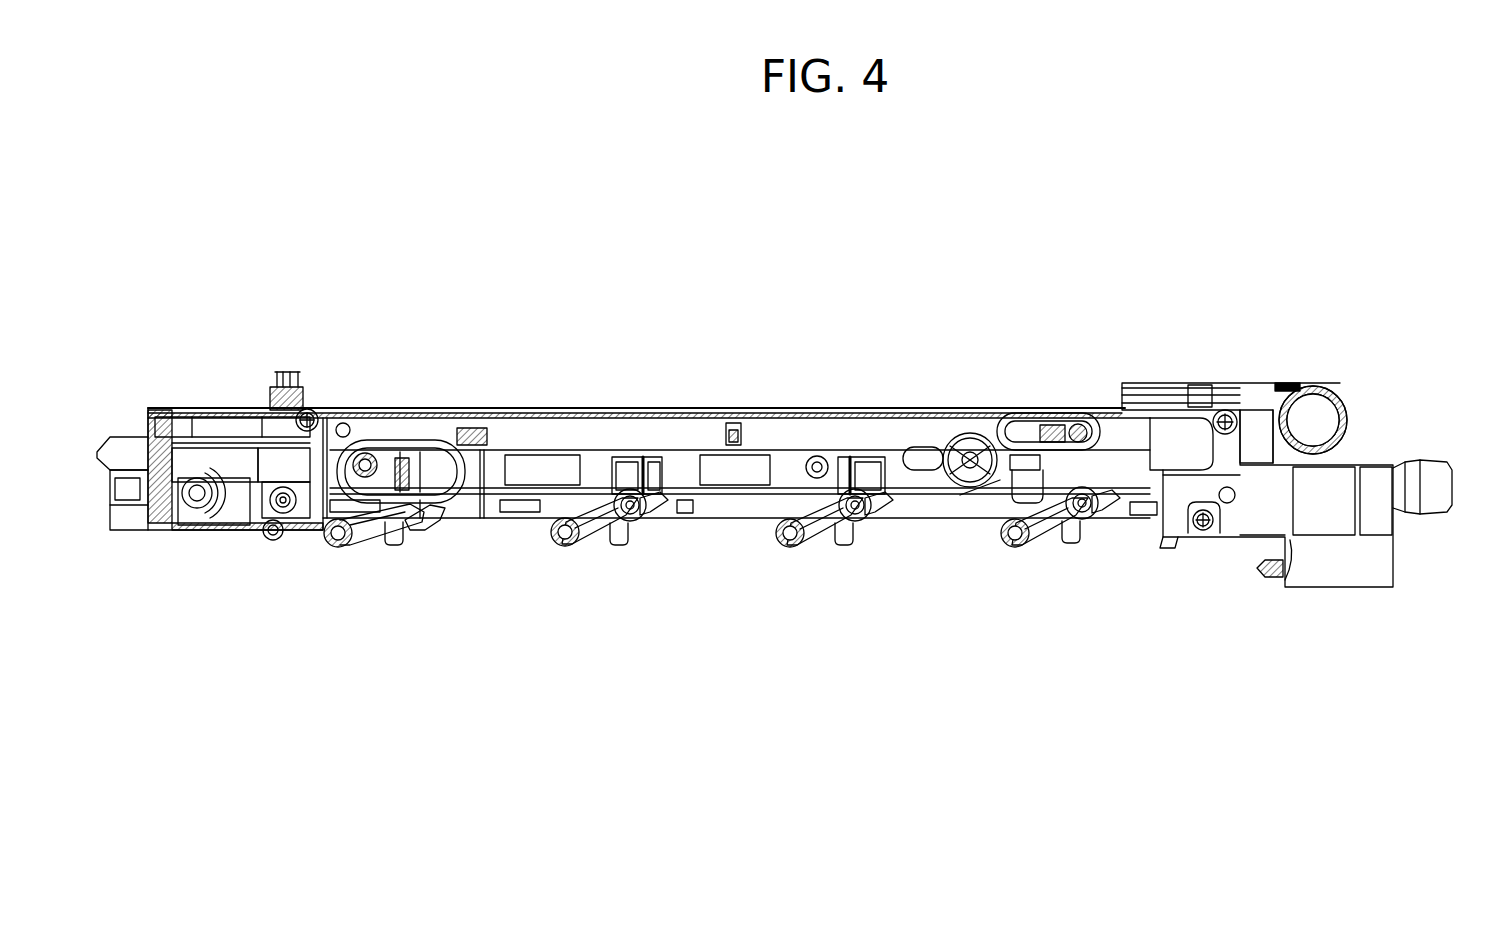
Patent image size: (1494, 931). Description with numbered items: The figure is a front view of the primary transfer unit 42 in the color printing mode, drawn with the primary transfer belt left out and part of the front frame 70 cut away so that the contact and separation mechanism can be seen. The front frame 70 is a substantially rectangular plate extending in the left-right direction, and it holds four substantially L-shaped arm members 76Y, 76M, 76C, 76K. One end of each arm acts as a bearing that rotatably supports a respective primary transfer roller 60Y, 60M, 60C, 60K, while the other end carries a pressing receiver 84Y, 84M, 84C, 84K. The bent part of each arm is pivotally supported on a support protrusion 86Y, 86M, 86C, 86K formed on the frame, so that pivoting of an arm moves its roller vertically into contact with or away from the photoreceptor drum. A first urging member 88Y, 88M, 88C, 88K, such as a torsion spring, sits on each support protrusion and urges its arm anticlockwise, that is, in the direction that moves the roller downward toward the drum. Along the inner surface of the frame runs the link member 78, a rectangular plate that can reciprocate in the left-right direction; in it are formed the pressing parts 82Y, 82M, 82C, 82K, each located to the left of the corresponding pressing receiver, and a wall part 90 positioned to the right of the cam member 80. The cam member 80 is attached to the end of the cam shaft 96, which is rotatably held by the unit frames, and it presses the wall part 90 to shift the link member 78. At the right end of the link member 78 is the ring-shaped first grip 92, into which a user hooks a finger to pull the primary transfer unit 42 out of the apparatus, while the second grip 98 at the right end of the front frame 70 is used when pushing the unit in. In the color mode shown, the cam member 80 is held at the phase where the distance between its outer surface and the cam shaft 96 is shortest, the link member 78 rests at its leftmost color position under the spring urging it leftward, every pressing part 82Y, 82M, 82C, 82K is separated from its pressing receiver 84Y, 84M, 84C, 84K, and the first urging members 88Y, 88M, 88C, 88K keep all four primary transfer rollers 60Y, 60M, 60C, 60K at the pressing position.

The primary transfer unit 42 is at (256, 191).
The primary transfer roller 60Y is at (342, 547).
The primary transfer roller 60M is at (568, 545).
The primary transfer roller 60C is at (798, 545).
The primary transfer roller 60K is at (1027, 545).
The front frame 70 is at (1238, 513).
The arm member 76Y is at (368, 540).
The arm member 76M is at (593, 545).
The arm member 76C is at (822, 540).
The arm member 76K is at (1052, 540).
The link member 78 is at (762, 422).
The cam member 80 is at (958, 435).
The pressing part 82Y is at (382, 443).
The pressing part 82M is at (610, 470).
The pressing part 82C is at (835, 463).
The pressing part 82K is at (1057, 430).
The pressing receiver 84Y is at (410, 447).
The pressing receiver 84M is at (632, 468).
The pressing receiver 84C is at (863, 463).
The pressing receiver 84K is at (1092, 440).
The support protrusion 86Y is at (412, 540).
The support protrusion 86M is at (627, 547).
The support protrusion 86C is at (848, 540).
The support protrusion 86K is at (1073, 540).
The first urging member 88Y is at (420, 530).
The first urging member 88M is at (653, 537).
The first urging member 88C is at (877, 540).
The first urging member 88K is at (1105, 540).
The wall part 90 is at (1000, 478).
The first grip 92 is at (1345, 395).
The cam shaft 96 is at (978, 490).
The second grip 98 is at (1447, 477).